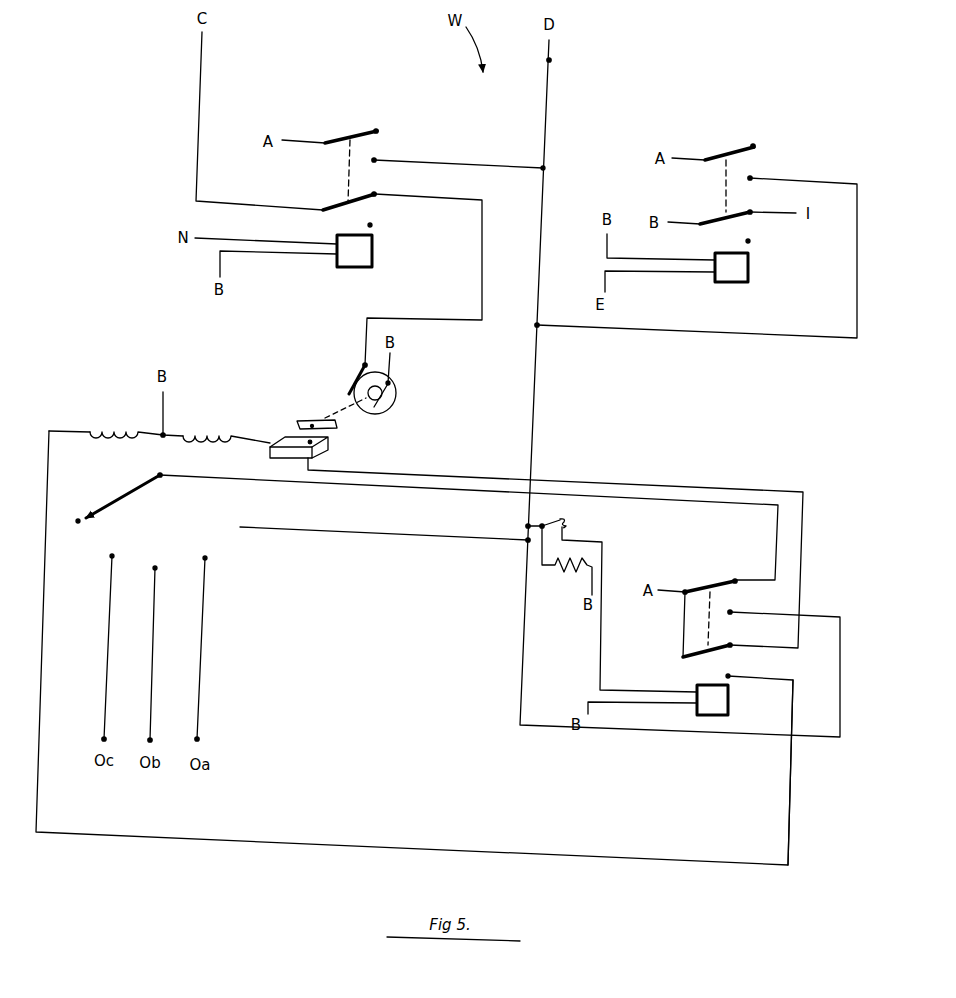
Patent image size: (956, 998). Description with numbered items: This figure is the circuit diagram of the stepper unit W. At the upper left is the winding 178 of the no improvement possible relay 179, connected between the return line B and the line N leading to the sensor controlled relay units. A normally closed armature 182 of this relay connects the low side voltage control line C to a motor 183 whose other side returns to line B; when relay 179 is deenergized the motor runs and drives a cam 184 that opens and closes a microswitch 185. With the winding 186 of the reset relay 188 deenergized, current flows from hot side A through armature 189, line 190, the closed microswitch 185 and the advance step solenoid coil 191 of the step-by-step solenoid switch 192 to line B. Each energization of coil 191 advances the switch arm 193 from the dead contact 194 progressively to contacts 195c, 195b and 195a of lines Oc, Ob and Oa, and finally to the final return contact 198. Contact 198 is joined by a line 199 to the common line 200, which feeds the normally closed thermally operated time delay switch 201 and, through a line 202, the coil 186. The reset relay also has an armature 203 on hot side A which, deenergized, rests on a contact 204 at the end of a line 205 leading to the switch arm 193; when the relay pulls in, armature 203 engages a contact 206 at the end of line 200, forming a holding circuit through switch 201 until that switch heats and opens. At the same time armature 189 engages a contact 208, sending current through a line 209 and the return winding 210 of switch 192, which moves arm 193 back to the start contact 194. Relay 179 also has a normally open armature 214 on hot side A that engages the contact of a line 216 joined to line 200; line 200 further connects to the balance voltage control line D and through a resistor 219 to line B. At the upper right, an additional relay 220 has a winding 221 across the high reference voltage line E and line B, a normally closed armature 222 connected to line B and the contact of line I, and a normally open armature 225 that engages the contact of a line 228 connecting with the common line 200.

The winding 178 is at (362, 256).
The no improvement possible relay 179 is at (342, 270).
The normally closed armature 182 is at (335, 205).
The motor 183 is at (397, 399).
The cam 184 is at (309, 418).
The microswitch 185 is at (330, 446).
The winding 186 is at (715, 700).
The reset relay 188 is at (690, 712).
The armature 189 is at (718, 653).
The line 190 is at (804, 522).
The advance step solenoid coil 191 is at (230, 432).
The step-by-step solenoid switch 192 is at (119, 368).
The switch arm 193 is at (125, 490).
The dead contact 194 is at (78, 522).
The contact 195a is at (207, 559).
The contact 195b is at (155, 569).
The contact 195c is at (113, 557).
The final return contact 198 is at (240, 527).
The line 199 is at (408, 535).
The line 200 is at (553, 96).
The normally closed thermally operated time delay switch 201 is at (572, 518).
The line 202 is at (642, 690).
The armature 203 is at (720, 579).
The contact 204 is at (738, 576).
The line 205 is at (675, 502).
The contact 206 is at (732, 611).
The contact 208 is at (728, 680).
The line 209 is at (743, 864).
The return winding 210 is at (122, 430).
The normally open armature 214 is at (352, 136).
The line 216 is at (474, 165).
The resistor 219 is at (566, 573).
The relay 220 is at (759, 269).
The winding 221 is at (739, 276).
The normally closed armature 222 is at (723, 223).
The normally open armature 225 is at (729, 154).
The line 228 is at (806, 340).